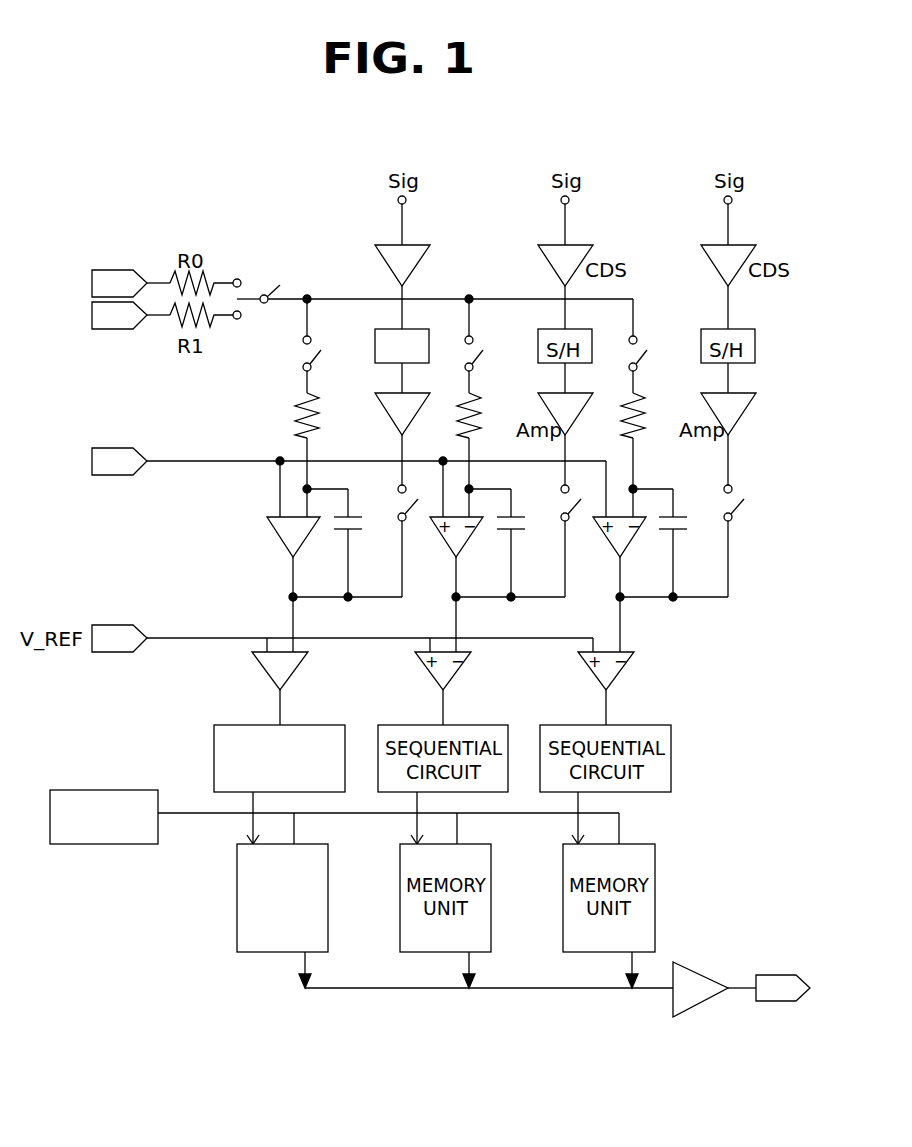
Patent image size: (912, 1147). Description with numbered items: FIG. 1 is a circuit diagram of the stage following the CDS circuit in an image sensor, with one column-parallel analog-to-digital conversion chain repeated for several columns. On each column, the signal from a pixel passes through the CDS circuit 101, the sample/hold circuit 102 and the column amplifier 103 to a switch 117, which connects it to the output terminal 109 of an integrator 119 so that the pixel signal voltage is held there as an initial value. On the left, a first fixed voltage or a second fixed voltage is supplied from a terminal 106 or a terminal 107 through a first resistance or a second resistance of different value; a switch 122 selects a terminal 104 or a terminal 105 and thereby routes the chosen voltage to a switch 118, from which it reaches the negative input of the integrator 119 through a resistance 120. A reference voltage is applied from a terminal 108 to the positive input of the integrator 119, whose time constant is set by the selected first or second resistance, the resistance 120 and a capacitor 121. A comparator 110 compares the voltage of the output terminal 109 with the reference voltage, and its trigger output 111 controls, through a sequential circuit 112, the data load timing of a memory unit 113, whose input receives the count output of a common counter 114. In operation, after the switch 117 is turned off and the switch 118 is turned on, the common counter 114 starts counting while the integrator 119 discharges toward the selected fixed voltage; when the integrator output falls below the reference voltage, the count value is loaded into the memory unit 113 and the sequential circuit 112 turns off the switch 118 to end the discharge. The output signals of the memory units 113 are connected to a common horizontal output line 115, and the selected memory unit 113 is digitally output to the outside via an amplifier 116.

The CDS circuit 101 is at (429, 245).
The sample/hold circuit 102 is at (420, 333).
The column amplifier 103 is at (421, 397).
The terminal 104 is at (242, 280).
The terminal 105 is at (241, 320).
The terminal 106 is at (116, 270).
The terminal 107 is at (116, 329).
The terminal 108 is at (113, 448).
The output terminal 109 is at (290, 596).
The comparator 110 is at (296, 670).
The trigger output 111 is at (279, 707).
The sequential circuit 112 is at (213, 760).
The memory unit 113 is at (237, 890).
The common counter 114 is at (110, 790).
The common horizontal output line 115 is at (488, 987).
The amplifier 116 is at (695, 969).
The switch 117 is at (399, 509).
The switch 118 is at (317, 358).
The integrator 119 is at (270, 517).
The resistance 120 is at (284, 418).
The capacitor 121 is at (355, 537).
The switch 122 is at (270, 298).